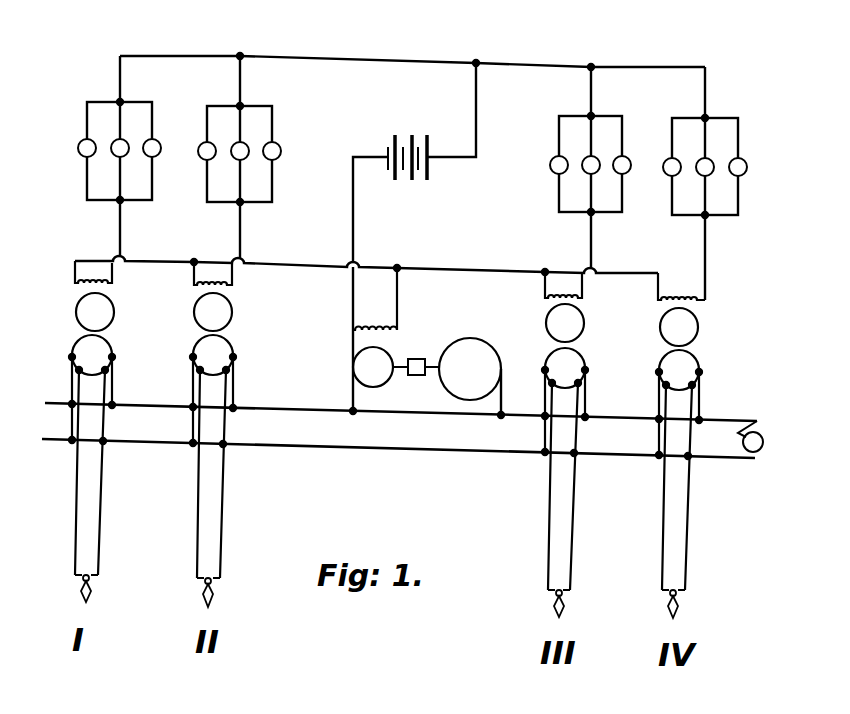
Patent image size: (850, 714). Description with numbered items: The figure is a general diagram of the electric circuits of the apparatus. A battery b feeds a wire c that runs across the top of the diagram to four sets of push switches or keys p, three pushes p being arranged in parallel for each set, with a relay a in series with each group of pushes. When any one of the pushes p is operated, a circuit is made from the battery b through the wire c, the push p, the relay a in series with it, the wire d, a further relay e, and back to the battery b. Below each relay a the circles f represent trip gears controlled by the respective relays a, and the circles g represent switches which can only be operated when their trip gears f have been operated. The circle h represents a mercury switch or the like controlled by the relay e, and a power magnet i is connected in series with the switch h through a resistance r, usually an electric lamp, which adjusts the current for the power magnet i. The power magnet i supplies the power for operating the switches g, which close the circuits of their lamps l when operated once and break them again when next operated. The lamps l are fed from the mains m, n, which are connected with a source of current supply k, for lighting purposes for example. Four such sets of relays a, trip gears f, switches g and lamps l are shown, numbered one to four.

The relay a is at (196, 285).
The battery b is at (410, 176).
The wire c is at (409, 62).
The wire d is at (490, 271).
The relay e is at (382, 324).
The trip gear f is at (212, 310).
The switch g is at (213, 347).
The mercury switch h is at (361, 365).
The power magnet i is at (478, 353).
The source of current supply k is at (764, 443).
The lamp l is at (82, 588).
The main m is at (383, 443).
The main n is at (386, 406).
The push switch p is at (118, 151).
The resistance r is at (421, 358).